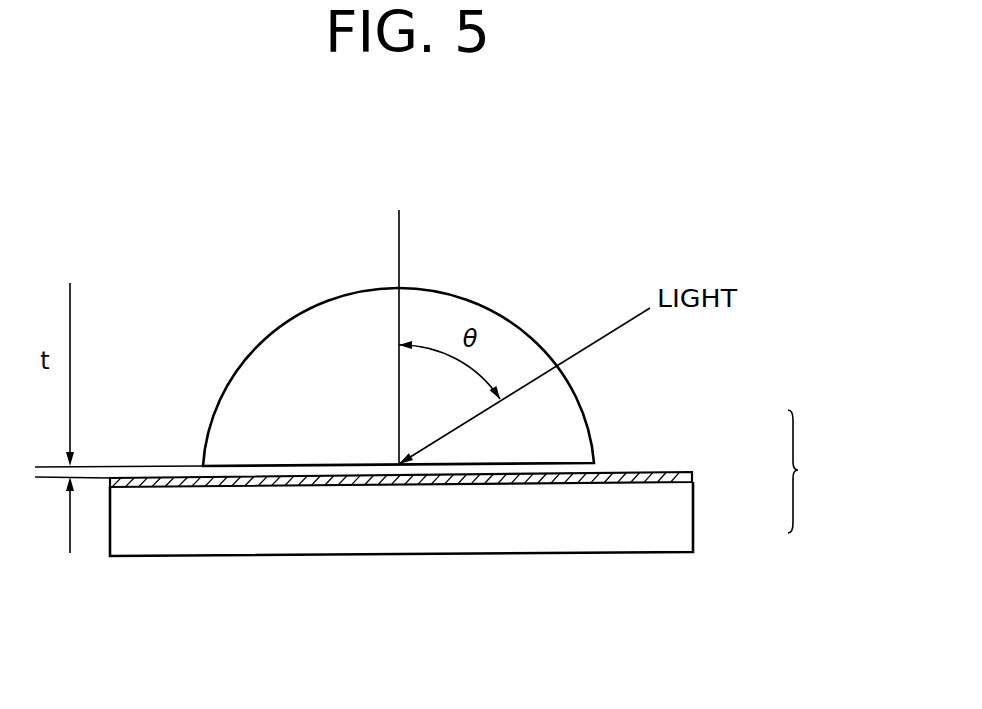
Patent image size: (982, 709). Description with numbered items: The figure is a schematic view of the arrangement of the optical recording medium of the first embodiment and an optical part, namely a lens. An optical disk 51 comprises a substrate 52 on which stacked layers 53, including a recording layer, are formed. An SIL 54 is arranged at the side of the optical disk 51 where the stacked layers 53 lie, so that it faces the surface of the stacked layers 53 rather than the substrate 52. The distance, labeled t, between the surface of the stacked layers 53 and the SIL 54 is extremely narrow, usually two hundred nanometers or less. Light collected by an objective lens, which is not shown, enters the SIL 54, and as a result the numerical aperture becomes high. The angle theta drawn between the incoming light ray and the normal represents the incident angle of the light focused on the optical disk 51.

The optical disk 51 is at (807, 471).
The substrate 52 is at (598, 520).
The stacked layers 53 is at (593, 470).
The SIL 54 is at (290, 332).